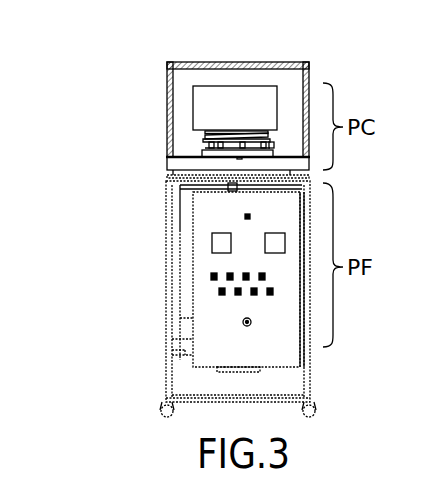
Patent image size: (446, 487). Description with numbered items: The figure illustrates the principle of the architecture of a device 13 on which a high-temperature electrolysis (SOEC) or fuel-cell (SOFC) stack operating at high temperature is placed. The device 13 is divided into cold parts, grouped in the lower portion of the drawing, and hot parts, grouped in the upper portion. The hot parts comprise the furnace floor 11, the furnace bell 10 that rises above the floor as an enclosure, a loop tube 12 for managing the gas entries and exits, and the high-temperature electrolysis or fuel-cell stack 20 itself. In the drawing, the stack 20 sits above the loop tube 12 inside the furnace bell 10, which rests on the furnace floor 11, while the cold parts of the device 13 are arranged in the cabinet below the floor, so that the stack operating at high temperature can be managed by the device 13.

The furnace bell 10 is at (163, 49).
The furnace floor 11 is at (172, 163).
The loop tube 12 is at (205, 136).
The device 13 is at (96, 152).
The high-temperature electrolysis (SOEC) or fuel cell (SOFC) stack 20 is at (198, 98).